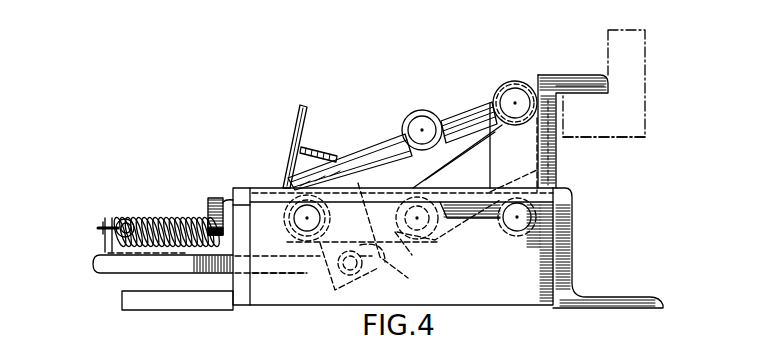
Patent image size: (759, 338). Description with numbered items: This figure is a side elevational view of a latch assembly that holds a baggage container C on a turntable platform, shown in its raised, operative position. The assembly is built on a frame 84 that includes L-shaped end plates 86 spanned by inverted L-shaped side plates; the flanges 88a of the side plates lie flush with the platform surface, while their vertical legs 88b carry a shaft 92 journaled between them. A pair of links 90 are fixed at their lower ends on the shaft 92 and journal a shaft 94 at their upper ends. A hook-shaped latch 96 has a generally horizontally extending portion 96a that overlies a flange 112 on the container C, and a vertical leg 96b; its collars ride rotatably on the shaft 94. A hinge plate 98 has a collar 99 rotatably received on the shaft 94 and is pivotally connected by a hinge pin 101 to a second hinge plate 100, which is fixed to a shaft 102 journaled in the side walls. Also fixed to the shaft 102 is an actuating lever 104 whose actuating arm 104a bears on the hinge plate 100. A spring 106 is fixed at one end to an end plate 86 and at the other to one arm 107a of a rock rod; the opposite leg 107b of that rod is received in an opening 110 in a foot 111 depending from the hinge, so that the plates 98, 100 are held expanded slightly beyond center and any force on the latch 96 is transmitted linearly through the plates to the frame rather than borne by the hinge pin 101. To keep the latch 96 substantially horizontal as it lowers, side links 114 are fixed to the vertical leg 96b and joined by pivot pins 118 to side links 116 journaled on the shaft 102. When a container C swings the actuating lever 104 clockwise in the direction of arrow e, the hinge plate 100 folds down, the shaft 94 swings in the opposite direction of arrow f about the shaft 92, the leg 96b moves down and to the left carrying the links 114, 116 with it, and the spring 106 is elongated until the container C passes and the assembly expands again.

The frame 84 is at (198, 195).
The end plate 86 is at (606, 296).
The flange 88a is at (558, 196).
The vertical leg 88b is at (499, 287).
The link 90 is at (480, 138).
The shaft 92 is at (517, 232).
The shaft 94 is at (517, 88).
The hook-shaped latch 96 is at (560, 70).
The horizontally extending portion 96a is at (581, 82).
The vertical leg 96b is at (556, 165).
The hinge plate 98 is at (461, 121).
The collar 99 is at (471, 71).
The hinge plate 100 is at (378, 153).
The hinge pin 101 is at (424, 122).
The shaft 102 is at (302, 213).
The actuating lever 104 is at (297, 130).
The actuating arm 104a is at (328, 156).
The spring 106 is at (166, 216).
The arm of rock rod 107a is at (118, 264).
The leg of rock rod 107b is at (308, 274).
The opening 110 is at (354, 273).
The foot 111 is at (400, 238).
The flange 112 is at (593, 137).
The side link 114 is at (447, 178).
The side link 116 is at (407, 254).
The pivot pin 118 is at (440, 233).
The container C is at (653, 93).
The arrow e is at (393, 130).
The arrow f is at (493, 59).